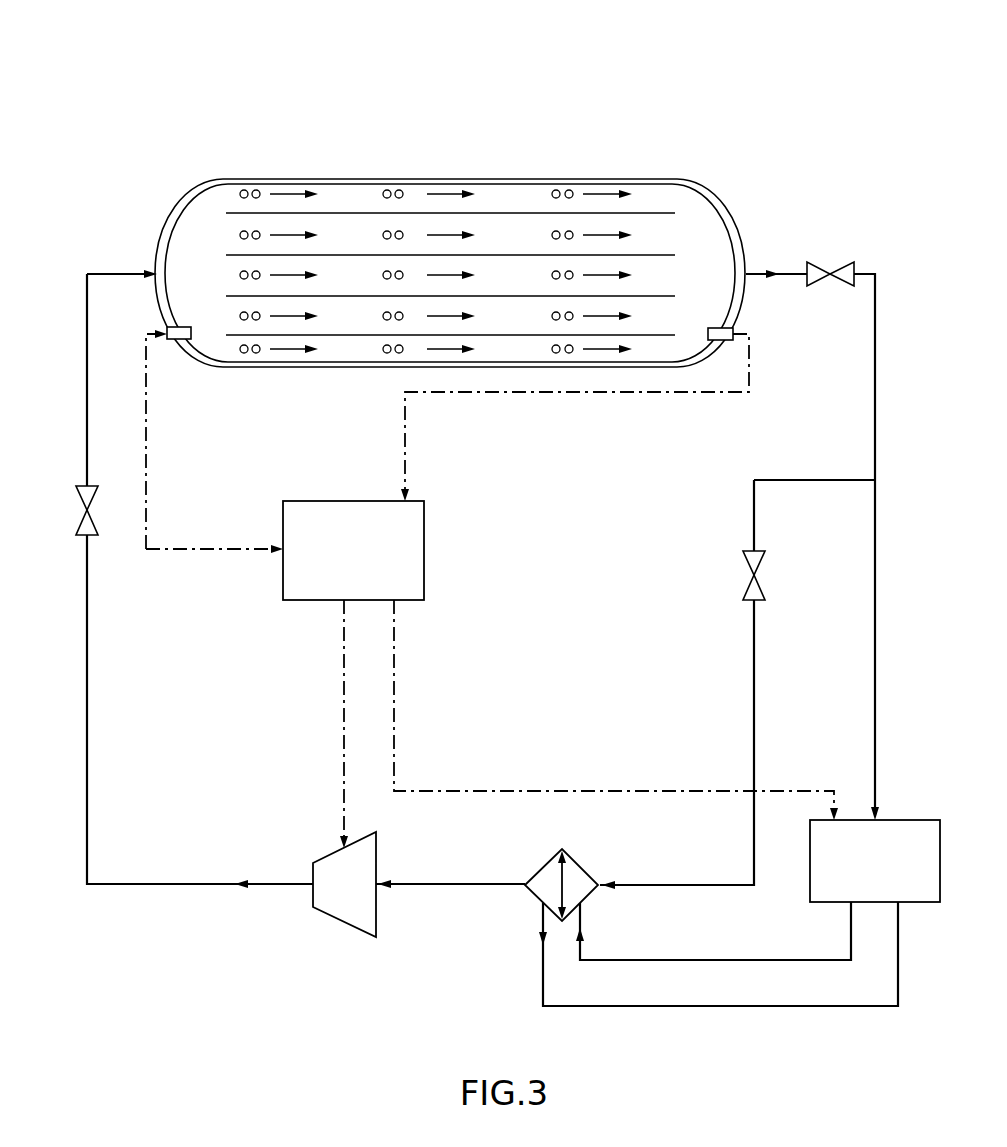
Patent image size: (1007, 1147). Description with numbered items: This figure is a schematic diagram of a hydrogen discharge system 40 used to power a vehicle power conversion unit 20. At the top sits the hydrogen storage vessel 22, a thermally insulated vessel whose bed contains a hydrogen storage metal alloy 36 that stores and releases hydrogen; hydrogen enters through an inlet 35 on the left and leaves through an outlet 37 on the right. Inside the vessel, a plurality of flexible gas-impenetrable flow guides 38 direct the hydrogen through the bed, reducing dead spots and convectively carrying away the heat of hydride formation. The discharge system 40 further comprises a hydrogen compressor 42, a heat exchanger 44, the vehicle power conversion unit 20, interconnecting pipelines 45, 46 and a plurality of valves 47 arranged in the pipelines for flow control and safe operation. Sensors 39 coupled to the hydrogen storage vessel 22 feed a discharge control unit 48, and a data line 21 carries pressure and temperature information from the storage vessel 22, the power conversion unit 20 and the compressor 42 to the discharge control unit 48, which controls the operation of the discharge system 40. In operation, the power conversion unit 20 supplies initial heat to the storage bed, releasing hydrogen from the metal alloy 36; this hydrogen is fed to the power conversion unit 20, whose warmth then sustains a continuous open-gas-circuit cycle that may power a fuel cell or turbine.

The vehicle power conversion unit 20 is at (864, 874).
The data line 21 is at (146, 445).
The hydrogen storage vessel 22 is at (373, 178).
The inlet 35 is at (148, 270).
The hydrogen storage metal alloy 36 is at (256, 186).
The outlet 37 is at (748, 272).
The flow guides 38 is at (507, 213).
The sensor 39 is at (175, 341).
The hydrogen discharge system 40 is at (816, 54).
The hydrogen compressor 42 is at (332, 898).
The heat exchanger 44 is at (578, 866).
The interconnecting pipeline 45 is at (87, 362).
The interconnecting pipeline 46 is at (875, 545).
The valves 47 is at (95, 536).
The discharge control unit 48 is at (341, 562).